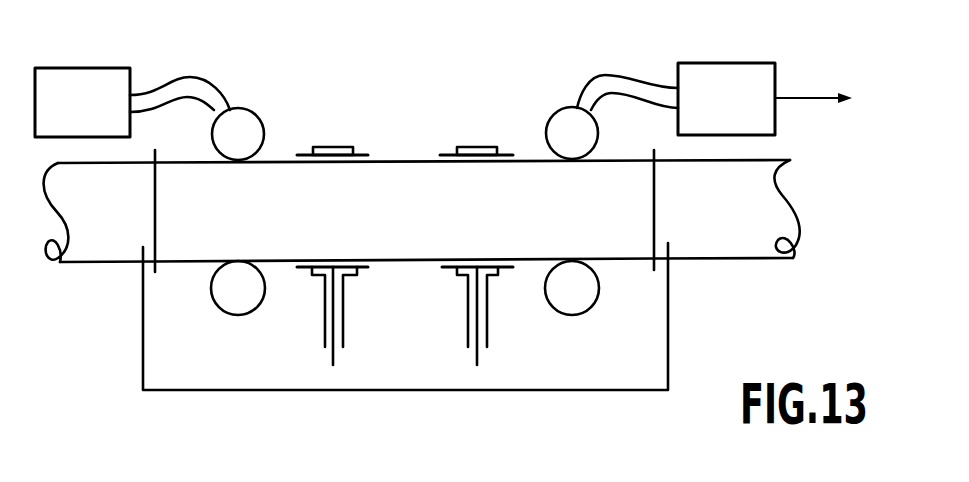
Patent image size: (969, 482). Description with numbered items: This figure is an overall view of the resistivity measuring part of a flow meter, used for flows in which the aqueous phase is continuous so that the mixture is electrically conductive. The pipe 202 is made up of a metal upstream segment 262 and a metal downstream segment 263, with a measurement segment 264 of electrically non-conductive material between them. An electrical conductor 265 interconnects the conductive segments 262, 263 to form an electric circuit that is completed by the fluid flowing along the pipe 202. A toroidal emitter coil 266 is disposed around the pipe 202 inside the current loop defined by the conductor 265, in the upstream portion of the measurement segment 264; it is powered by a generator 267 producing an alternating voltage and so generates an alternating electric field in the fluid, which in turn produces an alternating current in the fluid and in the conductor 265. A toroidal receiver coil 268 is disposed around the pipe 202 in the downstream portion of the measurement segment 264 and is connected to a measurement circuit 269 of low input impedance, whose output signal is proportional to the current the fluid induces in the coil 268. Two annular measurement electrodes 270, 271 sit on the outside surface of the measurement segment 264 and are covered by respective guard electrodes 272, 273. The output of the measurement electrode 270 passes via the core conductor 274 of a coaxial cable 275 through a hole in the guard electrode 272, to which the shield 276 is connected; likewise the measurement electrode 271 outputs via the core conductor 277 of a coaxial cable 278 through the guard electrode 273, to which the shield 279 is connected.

The pipe 202 is at (412, 132).
The upstream segment 262 is at (103, 238).
The downstream segment 263 is at (727, 237).
The measurement segment 264 is at (267, 187).
The electrical conductor 265 is at (395, 392).
The toroidal emitter coil 266 is at (247, 287).
The generator 267 is at (95, 90).
The toroidal receiver coil 268 is at (570, 125).
The measurement circuit 269 is at (730, 85).
The measurement electrode 270 is at (470, 147).
The measurement electrode 271 is at (325, 147).
The guard electrode 272 is at (490, 145).
The guard electrode 273 is at (340, 145).
The core conductor 274 is at (482, 355).
The coaxial cable 275 is at (465, 297).
The shield 276 is at (492, 290).
The core conductor 277 is at (333, 357).
The coaxial cable 278 is at (345, 285).
The shield 279 is at (324, 288).